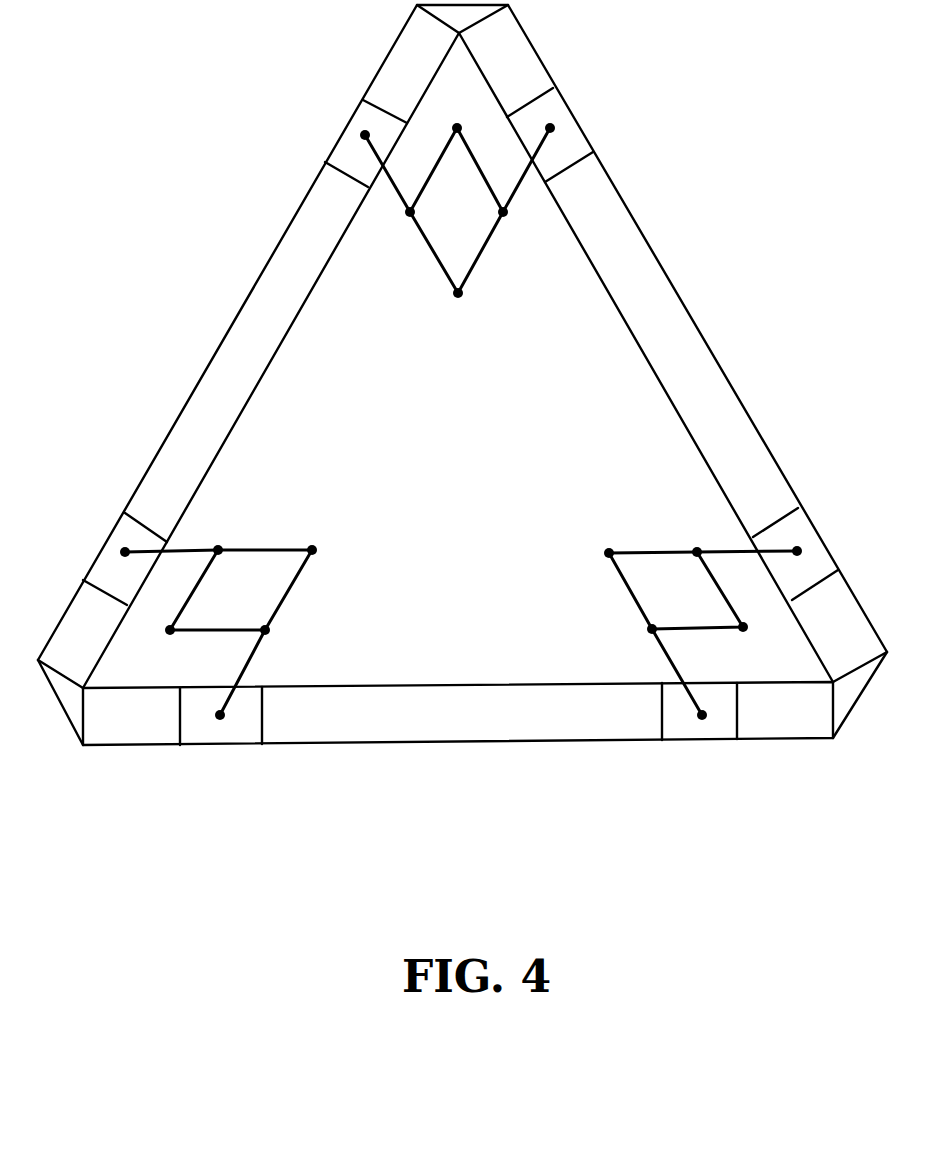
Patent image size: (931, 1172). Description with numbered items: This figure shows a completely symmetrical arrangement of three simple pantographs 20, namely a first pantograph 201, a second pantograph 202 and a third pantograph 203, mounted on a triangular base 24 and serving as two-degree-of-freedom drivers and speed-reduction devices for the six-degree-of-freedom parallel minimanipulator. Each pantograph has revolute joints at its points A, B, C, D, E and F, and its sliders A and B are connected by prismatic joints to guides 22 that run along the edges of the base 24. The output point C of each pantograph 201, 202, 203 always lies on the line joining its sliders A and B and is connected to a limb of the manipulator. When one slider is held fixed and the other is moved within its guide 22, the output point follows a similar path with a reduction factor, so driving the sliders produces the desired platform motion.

The guides 22 is at (232, 357).
The base 24 is at (488, 457).
The pantographs 20 is at (456, 408).
The first pantograph 201 is at (499, 252).
The second pantograph 202 is at (275, 515).
The third pantograph 203 is at (586, 588).